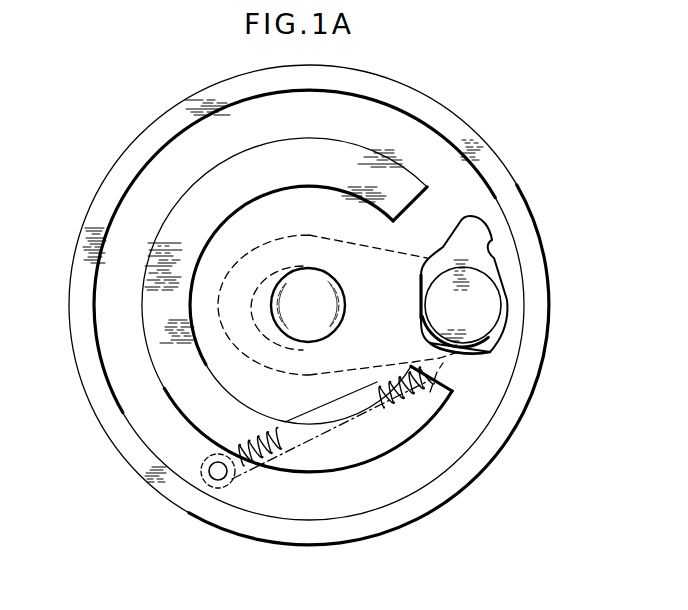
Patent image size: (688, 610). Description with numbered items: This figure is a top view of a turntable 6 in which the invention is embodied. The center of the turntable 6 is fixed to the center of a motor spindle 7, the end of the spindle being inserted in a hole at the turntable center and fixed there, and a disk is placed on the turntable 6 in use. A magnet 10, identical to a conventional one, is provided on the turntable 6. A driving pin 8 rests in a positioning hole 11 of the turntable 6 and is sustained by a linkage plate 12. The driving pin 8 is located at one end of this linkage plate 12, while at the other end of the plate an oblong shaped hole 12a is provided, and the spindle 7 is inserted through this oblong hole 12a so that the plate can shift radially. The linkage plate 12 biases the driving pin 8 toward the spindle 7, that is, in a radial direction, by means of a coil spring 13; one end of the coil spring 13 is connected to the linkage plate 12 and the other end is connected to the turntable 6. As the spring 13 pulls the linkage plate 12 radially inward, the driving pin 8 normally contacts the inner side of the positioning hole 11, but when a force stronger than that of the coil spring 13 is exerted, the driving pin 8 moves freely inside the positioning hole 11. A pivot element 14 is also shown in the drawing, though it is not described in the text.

The turntable 6 is at (443, 97).
The motor spindle 7 is at (333, 298).
The driving pin 8 is at (488, 297).
The magnet 10 is at (148, 345).
The positioning hole 11 is at (493, 224).
The linkage plate 12 is at (503, 323).
The oblong shaped hole 12a is at (236, 351).
The coil spring 13 is at (388, 420).
The pivot pin 14 is at (214, 481).